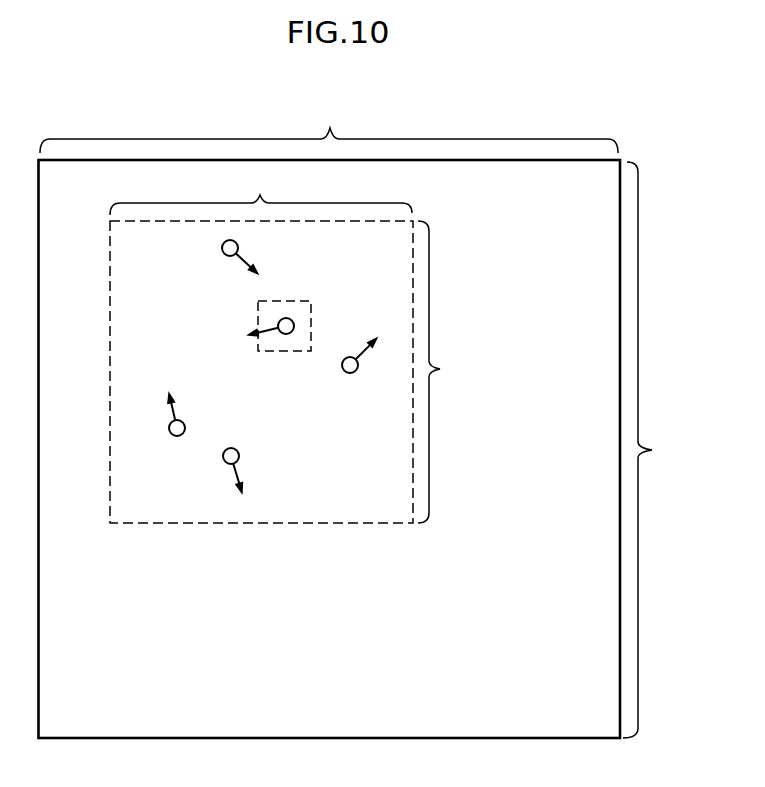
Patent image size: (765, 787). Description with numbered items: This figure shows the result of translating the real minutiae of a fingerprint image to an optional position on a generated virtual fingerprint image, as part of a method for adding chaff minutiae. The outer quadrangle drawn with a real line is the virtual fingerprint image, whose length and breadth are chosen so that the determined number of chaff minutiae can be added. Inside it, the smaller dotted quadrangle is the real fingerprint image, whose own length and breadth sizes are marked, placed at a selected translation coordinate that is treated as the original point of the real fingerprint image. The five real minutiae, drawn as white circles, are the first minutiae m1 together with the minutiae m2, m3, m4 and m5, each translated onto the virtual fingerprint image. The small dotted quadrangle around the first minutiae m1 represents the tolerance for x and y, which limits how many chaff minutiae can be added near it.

The first minutiae m1 is at (279, 339).
The real minutiae m2 is at (228, 261).
The real minutiae m3 is at (245, 470).
The real minutiae m4 is at (162, 427).
The real minutiae m5 is at (359, 364).